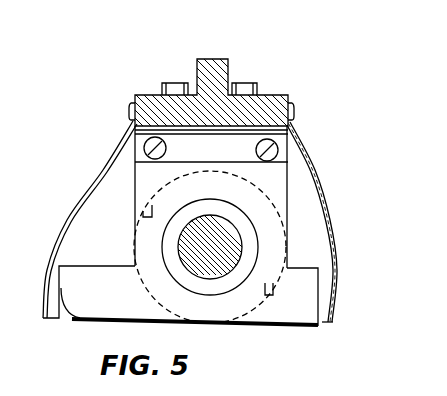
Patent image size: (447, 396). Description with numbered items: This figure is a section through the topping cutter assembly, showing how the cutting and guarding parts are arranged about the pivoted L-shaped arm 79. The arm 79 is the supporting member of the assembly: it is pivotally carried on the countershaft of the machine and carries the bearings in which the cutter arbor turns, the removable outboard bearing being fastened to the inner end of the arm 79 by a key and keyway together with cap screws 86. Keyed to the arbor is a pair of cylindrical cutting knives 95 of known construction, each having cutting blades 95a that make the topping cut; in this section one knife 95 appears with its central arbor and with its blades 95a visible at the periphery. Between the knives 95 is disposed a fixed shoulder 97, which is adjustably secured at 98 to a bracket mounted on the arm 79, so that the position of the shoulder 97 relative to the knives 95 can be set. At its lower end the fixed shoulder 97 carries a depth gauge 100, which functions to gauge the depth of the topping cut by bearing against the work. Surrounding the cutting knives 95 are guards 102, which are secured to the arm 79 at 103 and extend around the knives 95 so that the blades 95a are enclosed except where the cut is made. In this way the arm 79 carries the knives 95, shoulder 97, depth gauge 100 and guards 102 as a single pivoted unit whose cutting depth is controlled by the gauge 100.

The L-shaped arm 79 is at (231, 61).
The cap screws 86 is at (177, 83).
The guard securing point 103 is at (131, 108).
The adjustable securing point 98 is at (283, 164).
The fixed shoulder 97 is at (138, 183).
The depth gauge 100 is at (78, 318).
The guards 102 is at (81, 197).
The cylindrical cutting knives 95 is at (281, 215).
The cutting blades 95a is at (147, 212).